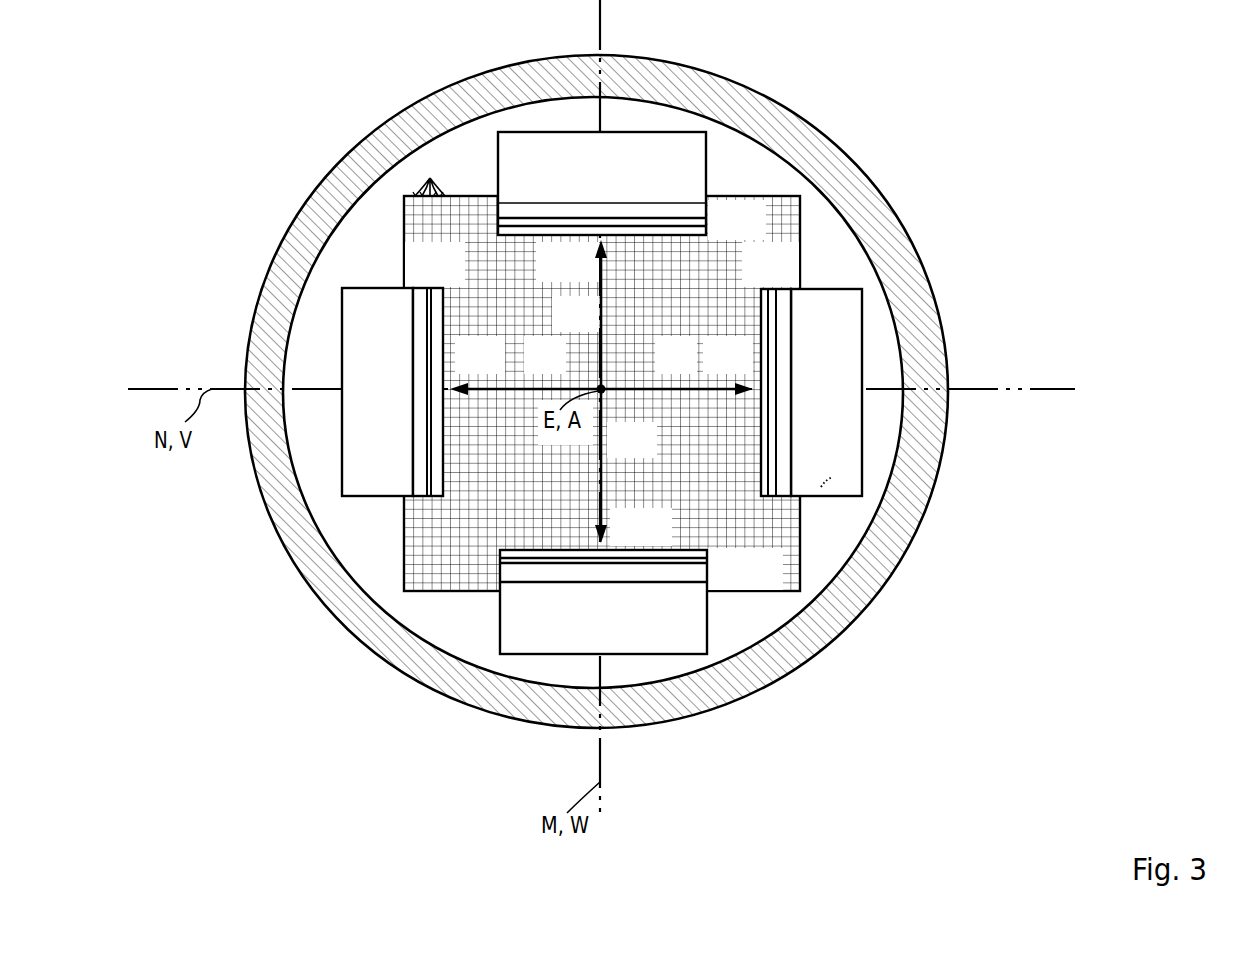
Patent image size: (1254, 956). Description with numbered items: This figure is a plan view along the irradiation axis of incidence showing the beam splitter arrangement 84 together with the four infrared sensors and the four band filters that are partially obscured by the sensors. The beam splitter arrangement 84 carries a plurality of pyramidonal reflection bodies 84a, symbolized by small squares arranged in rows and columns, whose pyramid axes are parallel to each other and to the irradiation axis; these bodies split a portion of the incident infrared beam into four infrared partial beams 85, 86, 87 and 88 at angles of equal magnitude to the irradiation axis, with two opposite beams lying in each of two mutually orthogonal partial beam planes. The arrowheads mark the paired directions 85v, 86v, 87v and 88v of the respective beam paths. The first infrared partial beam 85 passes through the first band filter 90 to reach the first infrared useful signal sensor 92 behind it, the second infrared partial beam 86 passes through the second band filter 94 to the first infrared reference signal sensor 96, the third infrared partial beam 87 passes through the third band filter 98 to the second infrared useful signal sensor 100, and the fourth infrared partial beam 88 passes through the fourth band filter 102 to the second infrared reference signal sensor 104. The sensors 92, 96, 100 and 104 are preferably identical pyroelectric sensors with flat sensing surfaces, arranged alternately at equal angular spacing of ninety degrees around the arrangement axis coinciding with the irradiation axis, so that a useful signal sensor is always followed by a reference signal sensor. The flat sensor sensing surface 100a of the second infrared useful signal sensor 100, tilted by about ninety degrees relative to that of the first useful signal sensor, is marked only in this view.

The beam splitter arrangement 84 is at (384, 520).
The pyramidonal reflection bodies 84a is at (429, 171).
The first infrared partial beam 85 is at (540, 384).
The direction of the first infrared partial beam 85v is at (470, 384).
The second infrared partial beam 86 is at (600, 319).
The direction of the second infrared partial beam 86v is at (598, 257).
The third infrared partial beam 87 is at (672, 384).
The direction of the third infrared partial beam 87v is at (745, 384).
The fourth infrared partial beam 88 is at (603, 434).
The direction of the fourth infrared partial beam 88v is at (605, 532).
The first band filter 90 is at (441, 298).
The first infrared useful signal sensor 92 is at (389, 296).
The second band filter 94 is at (697, 230).
The first infrared reference signal sensor 96 is at (513, 163).
The third band filter 98 is at (764, 300).
The second infrared useful signal sensor 100 is at (830, 296).
The sensor sensing surface 100a is at (820, 492).
The fourth band filter 102 is at (693, 555).
The second infrared reference signal sensor 104 is at (517, 608).